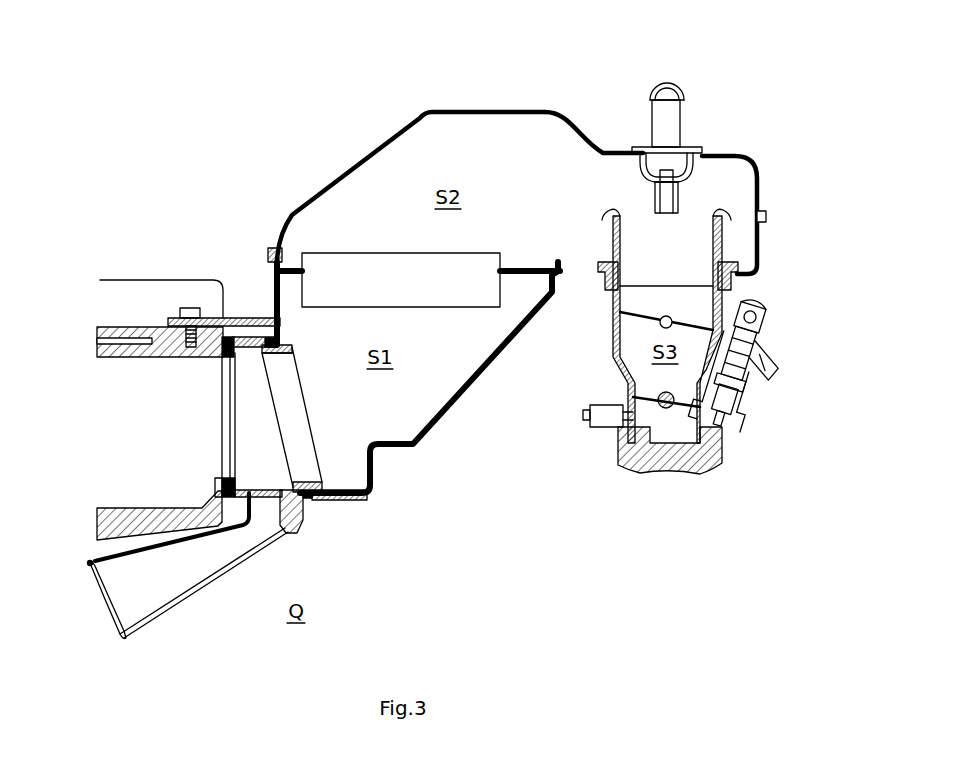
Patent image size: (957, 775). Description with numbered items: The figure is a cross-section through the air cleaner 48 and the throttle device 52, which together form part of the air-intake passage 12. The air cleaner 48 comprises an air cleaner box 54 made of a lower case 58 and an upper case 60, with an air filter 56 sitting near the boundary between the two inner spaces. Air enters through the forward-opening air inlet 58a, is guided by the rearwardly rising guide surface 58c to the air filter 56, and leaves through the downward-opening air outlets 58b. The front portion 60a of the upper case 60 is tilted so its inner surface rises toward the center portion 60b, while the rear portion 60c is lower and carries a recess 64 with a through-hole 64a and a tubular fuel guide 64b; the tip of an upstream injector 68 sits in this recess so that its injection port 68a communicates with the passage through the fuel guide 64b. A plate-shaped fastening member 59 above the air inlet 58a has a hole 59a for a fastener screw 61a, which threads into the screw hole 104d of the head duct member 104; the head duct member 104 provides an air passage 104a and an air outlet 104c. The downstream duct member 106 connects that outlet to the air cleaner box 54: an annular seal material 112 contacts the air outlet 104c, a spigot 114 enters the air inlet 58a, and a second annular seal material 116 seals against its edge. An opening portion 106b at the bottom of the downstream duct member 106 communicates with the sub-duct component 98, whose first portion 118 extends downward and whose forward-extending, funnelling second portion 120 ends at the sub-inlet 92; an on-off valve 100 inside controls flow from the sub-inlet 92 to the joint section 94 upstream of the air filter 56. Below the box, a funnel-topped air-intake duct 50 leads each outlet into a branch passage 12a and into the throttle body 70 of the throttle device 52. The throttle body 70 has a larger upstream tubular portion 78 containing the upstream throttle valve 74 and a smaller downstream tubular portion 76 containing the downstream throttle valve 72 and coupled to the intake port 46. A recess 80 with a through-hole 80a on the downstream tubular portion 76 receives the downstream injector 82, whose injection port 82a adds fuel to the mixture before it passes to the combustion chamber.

The air-intake passage 12 is at (465, 138).
The branch passage 12a is at (653, 427).
The intake port 46 is at (658, 460).
The air cleaner 48 is at (406, 114).
The air-intake duct 50 is at (693, 233).
The throttle device 52 is at (560, 315).
The air cleaner box 54 is at (270, 275).
The air filter 56 is at (332, 262).
The lower case 58 is at (412, 447).
The air inlet 58a is at (370, 488).
The air outlet 58b is at (596, 286).
The guide surface 58c is at (472, 375).
The fastening member 59 is at (241, 320).
The hole 59a is at (170, 323).
The upper case 60 is at (433, 108).
The front portion of upper case 60a is at (355, 170).
The center portion of upper case 60b is at (490, 110).
The rear portion of upper case 60c is at (714, 154).
The fastener screw 61a is at (190, 308).
The recess 64 is at (612, 156).
The through-hole 64a is at (636, 173).
The fuel guide 64b is at (652, 196).
The upstream injector 68 is at (663, 82).
The injection port 68a is at (667, 177).
The throttle body 70 is at (608, 360).
The downstream throttle valve 72 is at (647, 410).
The upstream throttle valve 74 is at (685, 322).
The downstream tubular portion 76 is at (658, 395).
The upstream tubular portion 78 is at (617, 332).
The recess 80 is at (727, 412).
The through-hole 80a is at (705, 427).
The downstream injector 82 is at (773, 348).
The injection port 82a is at (727, 422).
The sub-inlet 92 is at (103, 602).
The joint section 94 is at (262, 452).
The sub-duct component 98 is at (173, 607).
The on-off valve 100 is at (110, 607).
The head duct member 104 is at (100, 279).
The air passage 104a is at (133, 453).
The air outlet 104c is at (210, 462).
The screw hole 104d is at (183, 343).
The downstream duct member 106 is at (240, 327).
The opening portion 106b is at (263, 490).
The annular seal material 112 is at (223, 495).
The spigot 114 is at (323, 493).
The annular seal material 116 is at (305, 500).
The first portion 118 is at (268, 510).
The second portion 120 is at (205, 566).